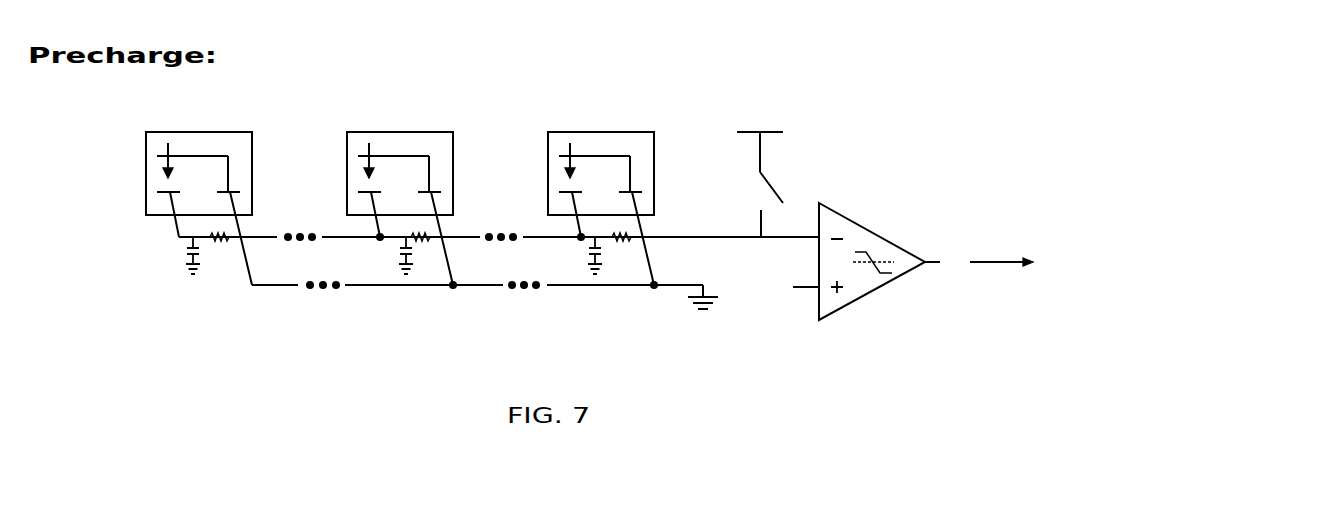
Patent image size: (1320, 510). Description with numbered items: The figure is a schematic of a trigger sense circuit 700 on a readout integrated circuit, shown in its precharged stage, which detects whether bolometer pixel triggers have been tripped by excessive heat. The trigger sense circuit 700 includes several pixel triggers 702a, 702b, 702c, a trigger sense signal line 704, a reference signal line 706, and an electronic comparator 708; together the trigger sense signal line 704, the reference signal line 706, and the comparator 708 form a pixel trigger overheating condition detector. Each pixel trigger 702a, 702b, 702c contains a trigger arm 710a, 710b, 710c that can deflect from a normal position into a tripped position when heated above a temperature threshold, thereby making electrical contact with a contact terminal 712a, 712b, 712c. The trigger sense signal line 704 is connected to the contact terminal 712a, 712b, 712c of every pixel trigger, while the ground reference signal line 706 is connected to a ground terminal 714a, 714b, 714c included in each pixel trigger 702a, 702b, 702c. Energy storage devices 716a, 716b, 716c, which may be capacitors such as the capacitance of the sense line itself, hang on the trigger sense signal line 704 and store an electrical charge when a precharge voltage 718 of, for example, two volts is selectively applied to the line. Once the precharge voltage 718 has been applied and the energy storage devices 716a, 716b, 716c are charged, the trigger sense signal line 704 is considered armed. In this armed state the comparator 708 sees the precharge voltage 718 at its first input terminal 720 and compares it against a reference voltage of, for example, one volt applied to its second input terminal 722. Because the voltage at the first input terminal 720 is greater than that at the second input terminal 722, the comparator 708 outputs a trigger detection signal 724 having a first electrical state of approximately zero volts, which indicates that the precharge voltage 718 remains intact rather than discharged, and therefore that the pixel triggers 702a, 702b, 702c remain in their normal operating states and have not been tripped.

The trigger sense circuit 700 is at (861, 97).
The pixel trigger 702a is at (234, 122).
The pixel trigger 702b is at (435, 122).
The pixel trigger 702c is at (636, 122).
The trigger sense signal line 704 is at (175, 232).
The reference signal line 706 is at (245, 265).
The electronic comparator 708 is at (877, 230).
The trigger arm 710a is at (198, 155).
The trigger arm 710b is at (399, 155).
The trigger arm 710c is at (600, 155).
The contact terminal 712a is at (160, 193).
The contact terminal 712b is at (361, 193).
The contact terminal 712c is at (562, 193).
The ground terminal 714a is at (237, 190).
The ground terminal 714b is at (438, 190).
The ground terminal 714c is at (639, 190).
The energy storage device 716a is at (188, 250).
The energy storage device 716b is at (402, 250).
The energy storage device 716c is at (592, 250).
The precharge voltage 718 is at (763, 162).
The first input terminal 720 is at (794, 237).
The second input terminal 722 is at (803, 290).
The trigger detection signal 724 is at (983, 258).